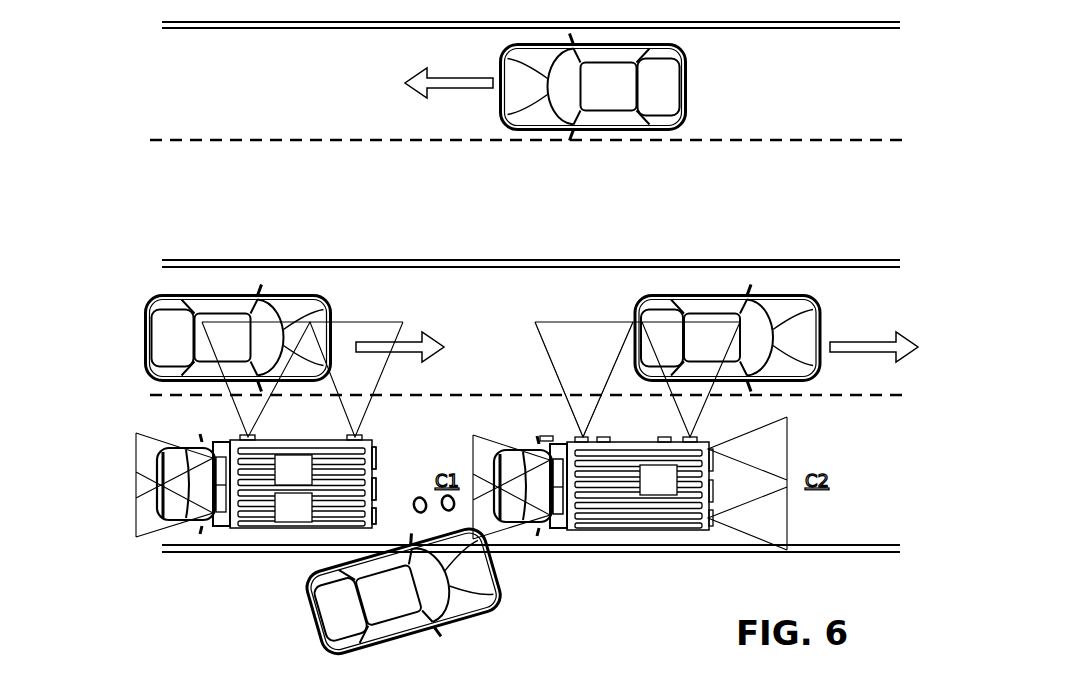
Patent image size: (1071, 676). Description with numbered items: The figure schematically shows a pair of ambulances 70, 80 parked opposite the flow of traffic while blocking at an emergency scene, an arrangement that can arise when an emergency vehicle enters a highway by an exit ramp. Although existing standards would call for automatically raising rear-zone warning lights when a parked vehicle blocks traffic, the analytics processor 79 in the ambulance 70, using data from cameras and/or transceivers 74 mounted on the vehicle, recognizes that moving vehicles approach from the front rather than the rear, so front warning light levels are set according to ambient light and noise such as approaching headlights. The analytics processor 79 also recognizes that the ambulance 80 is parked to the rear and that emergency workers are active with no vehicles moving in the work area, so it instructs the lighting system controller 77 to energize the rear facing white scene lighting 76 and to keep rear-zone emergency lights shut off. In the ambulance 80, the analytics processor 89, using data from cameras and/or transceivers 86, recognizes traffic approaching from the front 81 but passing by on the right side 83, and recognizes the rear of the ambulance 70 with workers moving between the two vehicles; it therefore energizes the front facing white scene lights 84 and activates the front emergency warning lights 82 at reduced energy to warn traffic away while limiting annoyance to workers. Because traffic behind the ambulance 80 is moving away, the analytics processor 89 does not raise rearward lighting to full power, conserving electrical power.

The ambulance 70 is at (286, 440).
The cameras and/or transceivers 74 is at (377, 453).
The rear facing white scene lighting 76 is at (372, 492).
The lighting system controller 77 is at (293, 507).
The analytics processor 79 is at (293, 470).
The ambulance 80 is at (703, 535).
The traffic approaching from the front 81 is at (461, 461).
The front emergency warning lights 82 is at (555, 515).
The right side 83 is at (627, 416).
The front facing white scene lights 84 is at (570, 473).
The cameras and/or transceivers 86 is at (219, 532).
The analytics processor 89 is at (658, 480).